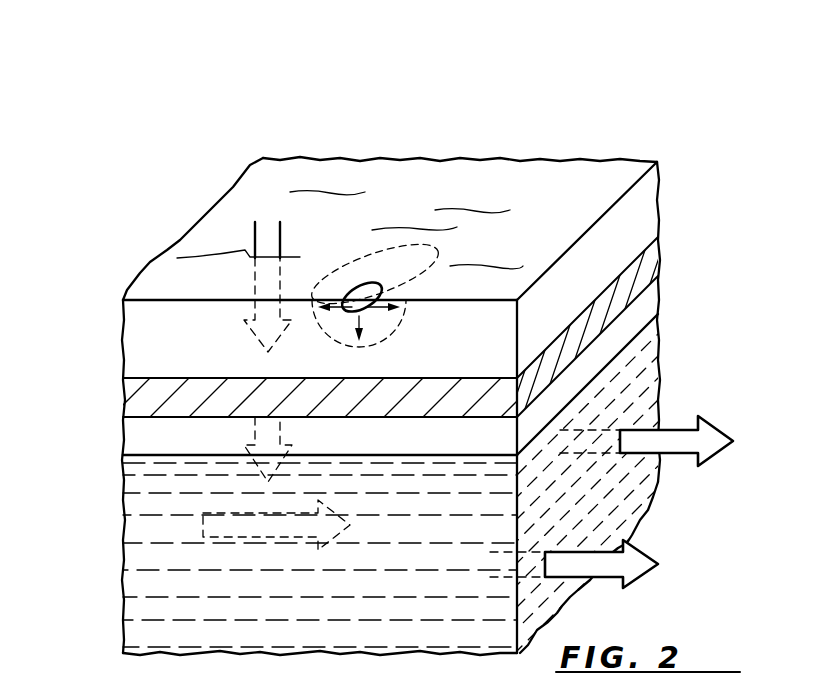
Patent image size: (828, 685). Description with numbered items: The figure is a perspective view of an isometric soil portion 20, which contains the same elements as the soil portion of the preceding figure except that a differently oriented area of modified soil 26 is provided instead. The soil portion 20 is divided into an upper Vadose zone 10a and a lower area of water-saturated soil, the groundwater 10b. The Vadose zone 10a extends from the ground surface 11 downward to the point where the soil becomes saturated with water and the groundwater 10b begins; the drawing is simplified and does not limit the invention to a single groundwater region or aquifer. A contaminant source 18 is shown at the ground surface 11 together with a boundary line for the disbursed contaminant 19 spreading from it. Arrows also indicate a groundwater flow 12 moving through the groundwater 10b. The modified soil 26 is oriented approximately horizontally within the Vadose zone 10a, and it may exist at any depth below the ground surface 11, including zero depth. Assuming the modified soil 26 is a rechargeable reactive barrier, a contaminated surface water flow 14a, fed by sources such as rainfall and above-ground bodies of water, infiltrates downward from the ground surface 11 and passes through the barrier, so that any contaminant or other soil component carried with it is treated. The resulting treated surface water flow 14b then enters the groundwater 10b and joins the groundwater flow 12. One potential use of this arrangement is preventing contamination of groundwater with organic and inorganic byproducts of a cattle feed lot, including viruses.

The soil portion 20 is at (235, 104).
The ground surface 11 is at (313, 172).
The Vadose zone 10a is at (110, 305).
The groundwater 10b is at (110, 457).
The modified soil 26 is at (370, 408).
The contaminated surface water flow 14a is at (252, 342).
The treated surface water flow 14b is at (252, 435).
The contaminant source 18 is at (378, 292).
The disbursed contaminant 19 is at (393, 334).
The fluid flow 12 is at (350, 527).